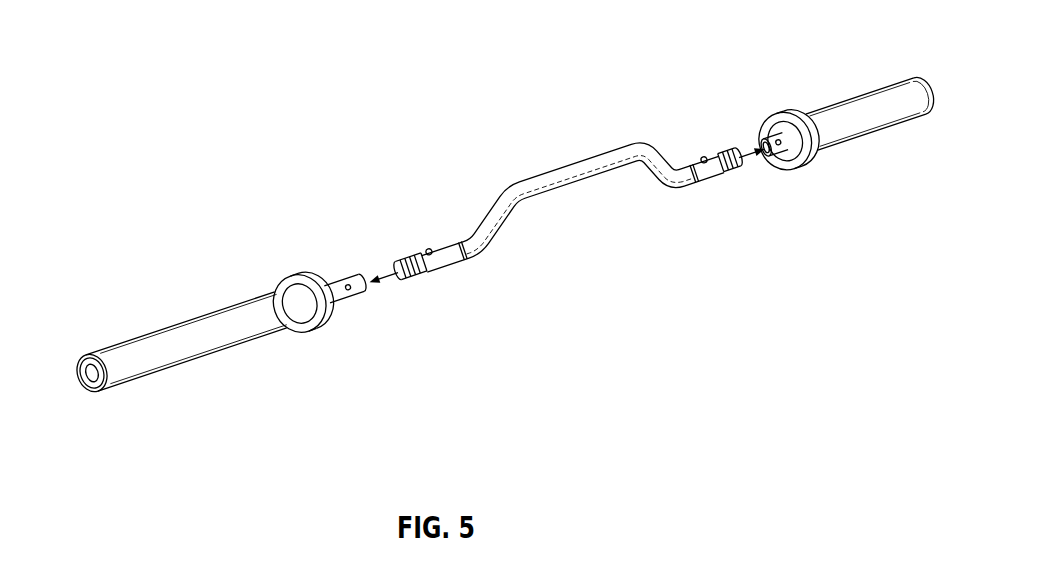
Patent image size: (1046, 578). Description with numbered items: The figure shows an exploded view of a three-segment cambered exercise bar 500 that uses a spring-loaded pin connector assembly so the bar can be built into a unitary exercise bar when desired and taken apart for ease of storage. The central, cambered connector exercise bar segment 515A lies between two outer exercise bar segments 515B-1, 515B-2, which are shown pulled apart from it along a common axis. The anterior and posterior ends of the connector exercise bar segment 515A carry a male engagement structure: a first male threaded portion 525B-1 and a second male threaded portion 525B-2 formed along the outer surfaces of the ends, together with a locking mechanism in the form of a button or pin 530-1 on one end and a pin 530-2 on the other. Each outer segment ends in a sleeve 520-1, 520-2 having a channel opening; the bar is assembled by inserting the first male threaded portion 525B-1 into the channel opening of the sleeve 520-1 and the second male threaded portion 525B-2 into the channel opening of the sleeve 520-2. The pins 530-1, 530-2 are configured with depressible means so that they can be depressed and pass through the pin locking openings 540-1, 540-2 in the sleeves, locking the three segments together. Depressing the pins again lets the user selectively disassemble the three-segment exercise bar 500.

The three-segment cambered exercise bar 500 is at (210, 108).
The connector exercise bar segment 515A is at (593, 167).
The exercise bar segment 515B-1 is at (123, 357).
The exercise bar segment 515B-2 is at (880, 127).
The sleeve 520-1 is at (350, 297).
The sleeve 520-2 is at (777, 123).
The first male threaded portion 525B-1 is at (415, 276).
The second male threaded portion 525B-2 is at (725, 173).
The pin 530-1 is at (432, 252).
The pin 530-2 is at (705, 160).
The pin locking opening 540-1 is at (353, 277).
The pin locking opening 540-2 is at (780, 147).